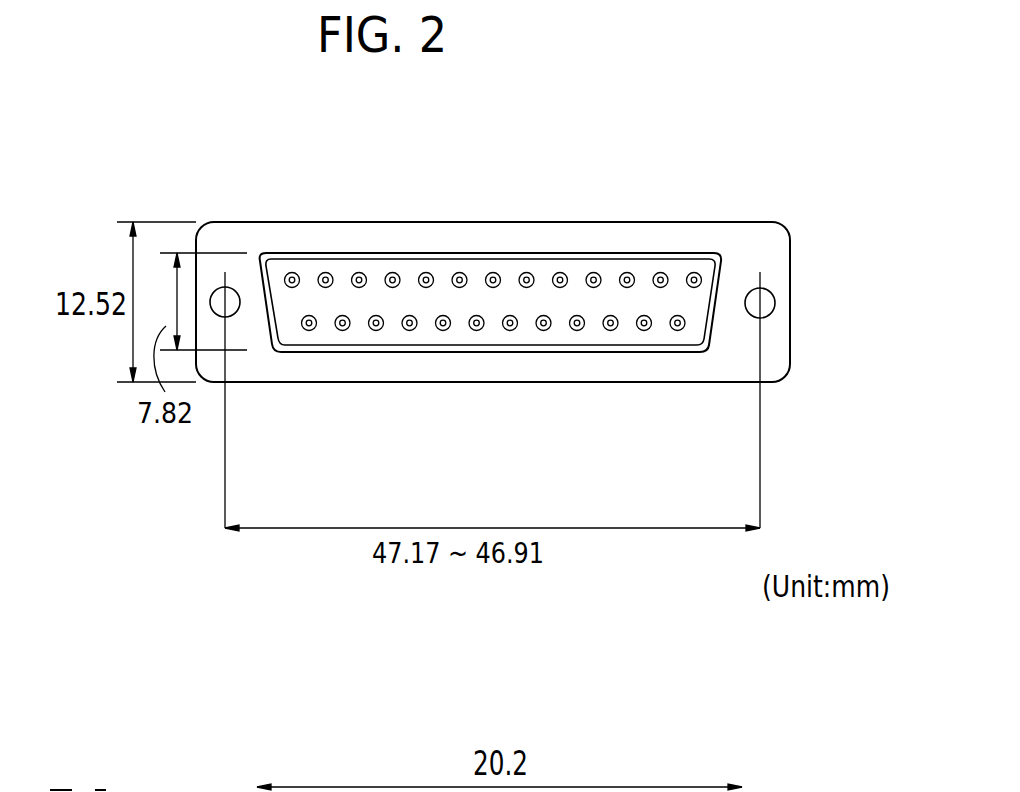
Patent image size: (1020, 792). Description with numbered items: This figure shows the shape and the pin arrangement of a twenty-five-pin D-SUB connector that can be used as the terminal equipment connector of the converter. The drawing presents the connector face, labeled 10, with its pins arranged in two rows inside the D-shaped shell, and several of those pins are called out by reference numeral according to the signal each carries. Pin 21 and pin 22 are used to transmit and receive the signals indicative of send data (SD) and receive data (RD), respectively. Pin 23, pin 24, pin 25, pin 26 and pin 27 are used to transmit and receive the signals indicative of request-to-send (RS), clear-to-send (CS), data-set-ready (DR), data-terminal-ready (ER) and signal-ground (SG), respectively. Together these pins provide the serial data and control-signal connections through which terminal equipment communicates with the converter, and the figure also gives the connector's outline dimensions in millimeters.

The connector shell 10 is at (258, 252).
The pin 21 is at (701, 188).
The pin 22 is at (669, 188).
The pin 23 is at (631, 188).
The pin 24 is at (595, 188).
The pin 25 is at (559, 188).
The pin 26 is at (434, 417).
The pin 27 is at (523, 188).